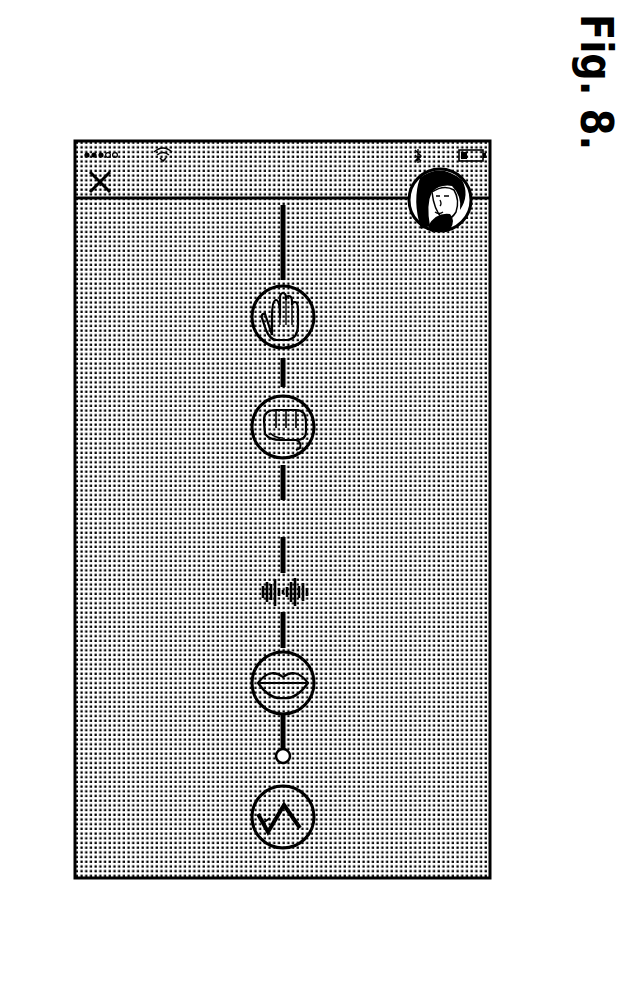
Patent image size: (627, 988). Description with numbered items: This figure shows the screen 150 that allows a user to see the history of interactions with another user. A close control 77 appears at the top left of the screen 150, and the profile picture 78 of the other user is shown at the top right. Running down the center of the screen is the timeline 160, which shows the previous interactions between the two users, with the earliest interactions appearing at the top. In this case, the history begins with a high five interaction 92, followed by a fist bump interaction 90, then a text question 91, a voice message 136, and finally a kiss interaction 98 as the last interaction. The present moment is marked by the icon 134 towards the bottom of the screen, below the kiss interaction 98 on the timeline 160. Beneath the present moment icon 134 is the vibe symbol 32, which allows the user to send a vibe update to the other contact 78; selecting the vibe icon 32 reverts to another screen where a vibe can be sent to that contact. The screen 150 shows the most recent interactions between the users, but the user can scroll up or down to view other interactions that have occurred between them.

The messaging user interface screen 150 is at (463, 261).
The close control 77 is at (97, 181).
The profile picture 78 is at (470, 206).
The timeline 160 is at (288, 237).
The high five interaction 92 is at (313, 322).
The fist bump interaction 90 is at (313, 432).
The text question 91 is at (368, 512).
The voice message 136 is at (310, 597).
The kiss interaction 98 is at (312, 692).
The present moment icon 134 is at (290, 761).
The vibe icon 32 is at (258, 845).